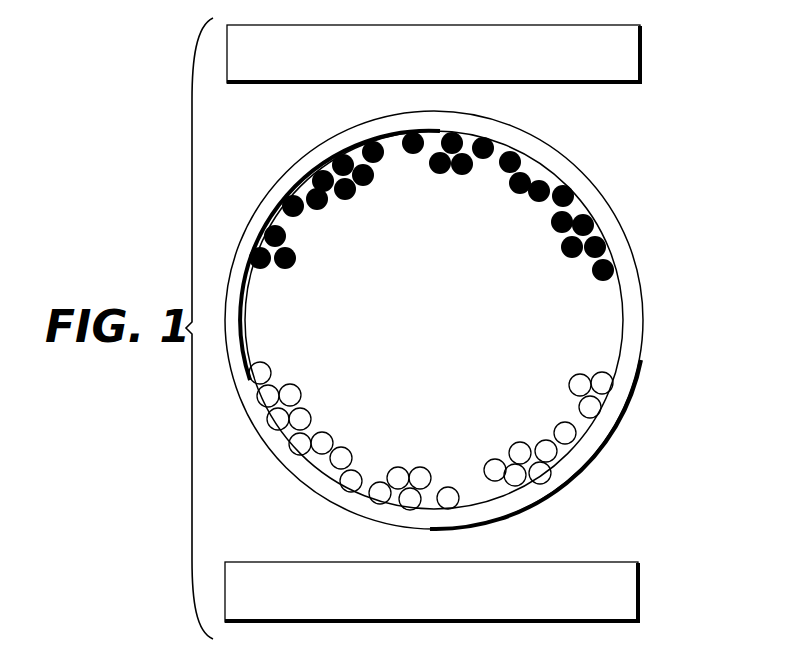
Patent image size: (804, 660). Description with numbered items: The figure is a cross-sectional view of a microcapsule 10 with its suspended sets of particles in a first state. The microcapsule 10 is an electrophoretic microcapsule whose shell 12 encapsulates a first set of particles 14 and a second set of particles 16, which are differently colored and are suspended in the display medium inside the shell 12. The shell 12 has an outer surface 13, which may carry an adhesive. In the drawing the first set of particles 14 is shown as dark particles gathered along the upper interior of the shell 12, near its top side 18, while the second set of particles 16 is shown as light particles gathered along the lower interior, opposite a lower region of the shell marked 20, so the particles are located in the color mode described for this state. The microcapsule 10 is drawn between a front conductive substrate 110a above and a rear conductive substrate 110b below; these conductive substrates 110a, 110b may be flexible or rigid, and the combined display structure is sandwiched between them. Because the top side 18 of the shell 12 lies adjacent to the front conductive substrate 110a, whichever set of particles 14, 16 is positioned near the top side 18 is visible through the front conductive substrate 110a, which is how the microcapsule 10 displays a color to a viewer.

The microcapsule 10 is at (466, 323).
The shell 12 is at (647, 312).
The outer surface 13 is at (620, 214).
The first set of particles 14 is at (344, 198).
The second set of particles 16 is at (332, 438).
The top side 18 is at (432, 113).
The rotation direction arrow (bottom) 20 is at (432, 529).
The front conductive substrate 110a is at (640, 52).
The rear conductive substrate 110b is at (640, 598).